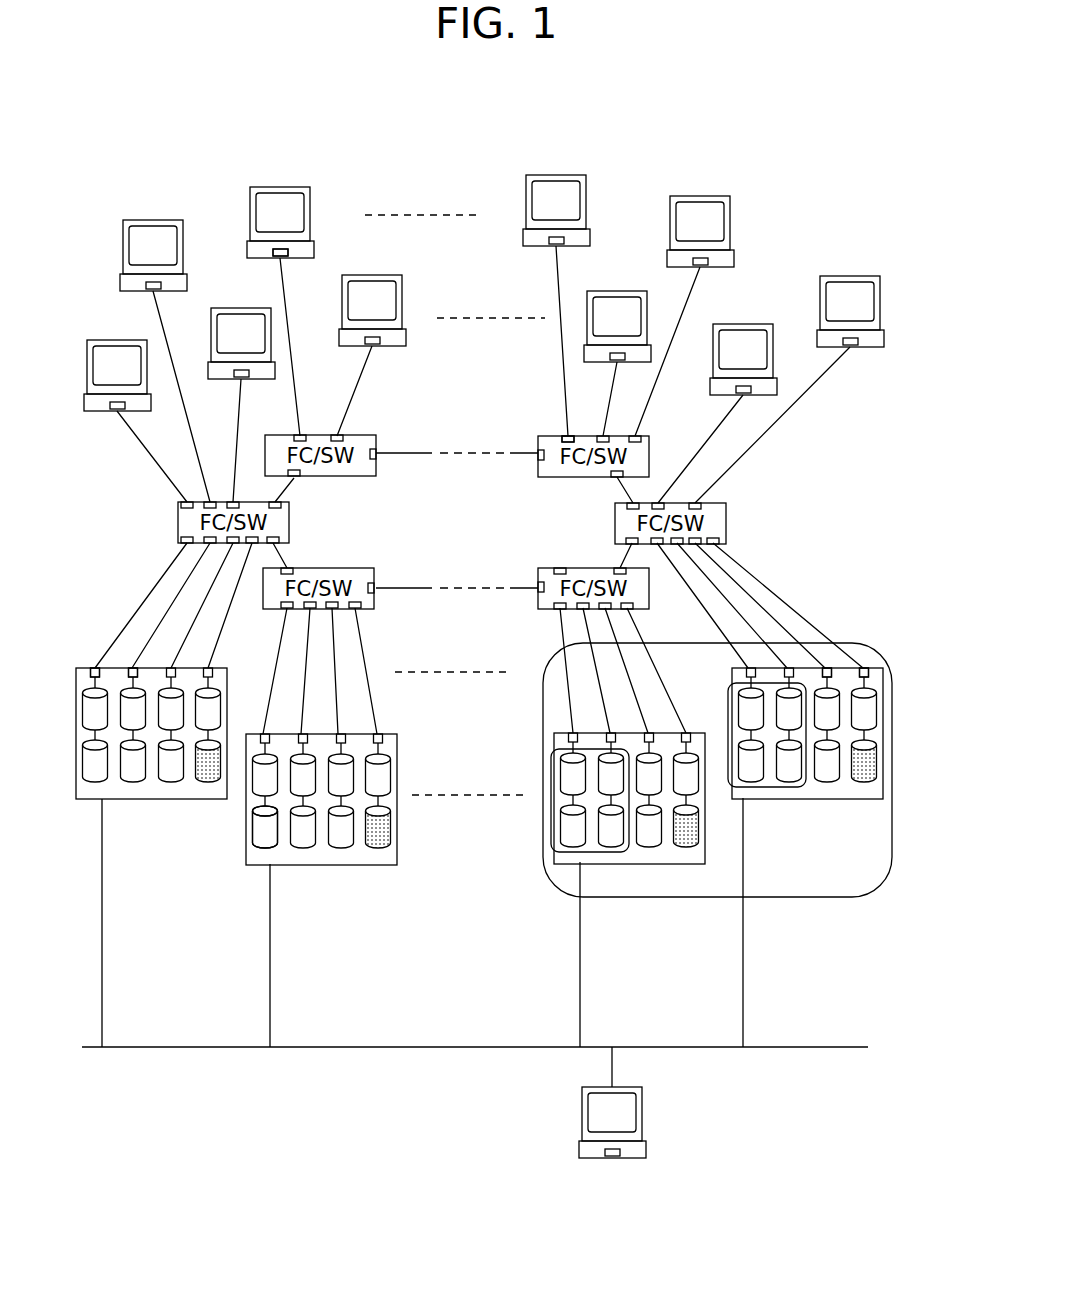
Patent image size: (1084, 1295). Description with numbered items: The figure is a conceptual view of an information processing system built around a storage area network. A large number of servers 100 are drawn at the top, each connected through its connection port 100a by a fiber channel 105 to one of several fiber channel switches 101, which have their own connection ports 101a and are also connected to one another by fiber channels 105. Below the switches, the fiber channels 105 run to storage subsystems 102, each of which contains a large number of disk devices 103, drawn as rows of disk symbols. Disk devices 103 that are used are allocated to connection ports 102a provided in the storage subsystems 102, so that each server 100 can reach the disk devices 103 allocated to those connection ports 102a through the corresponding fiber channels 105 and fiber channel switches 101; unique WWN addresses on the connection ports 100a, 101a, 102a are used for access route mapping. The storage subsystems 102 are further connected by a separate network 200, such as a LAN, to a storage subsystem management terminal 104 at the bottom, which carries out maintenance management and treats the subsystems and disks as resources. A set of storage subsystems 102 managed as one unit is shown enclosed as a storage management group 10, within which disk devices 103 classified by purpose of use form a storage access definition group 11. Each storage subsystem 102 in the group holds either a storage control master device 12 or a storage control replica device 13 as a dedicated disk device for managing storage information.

The server 100 is at (287, 187).
The connection port 100a is at (280, 258).
The fiber channel switch 101 is at (726, 512).
The connection port 101a is at (566, 437).
The storage subsystem 102 is at (139, 800).
The connection port 102a is at (131, 668).
The disk device 103 is at (255, 832).
The storage subsystem management terminal 104 is at (641, 1100).
The fiber channel 105 is at (367, 665).
The storage management group 10 is at (547, 878).
The storage access definition group 11 is at (551, 762).
The storage control master device 12 is at (685, 843).
The storage control replica device 13 is at (863, 778).
The network 200 is at (207, 1047).